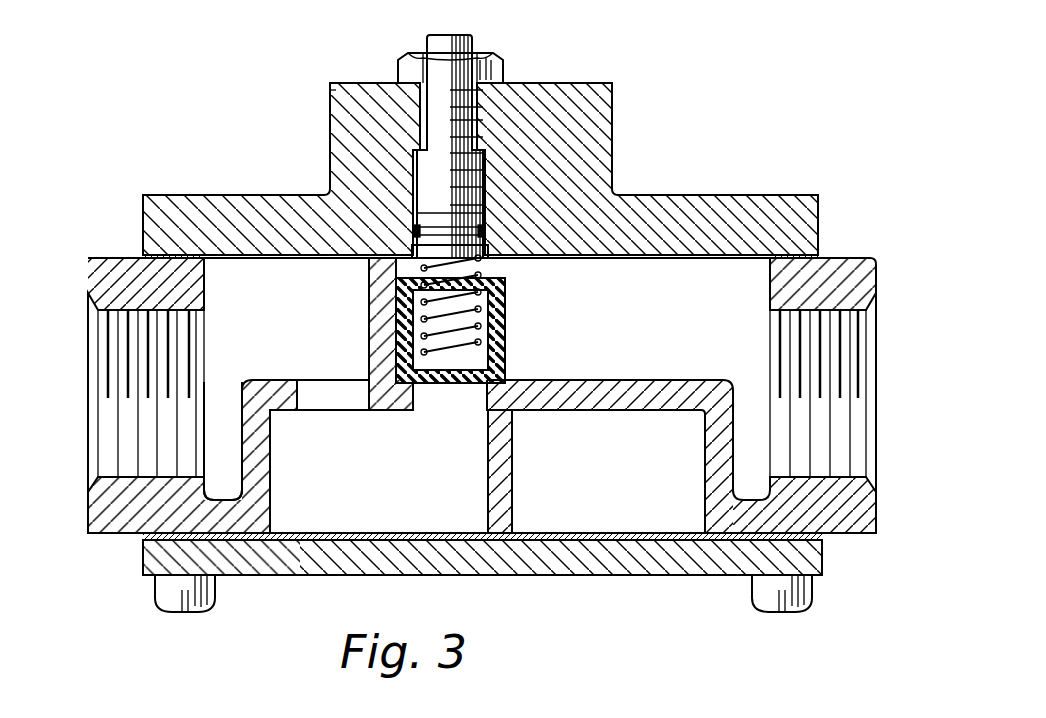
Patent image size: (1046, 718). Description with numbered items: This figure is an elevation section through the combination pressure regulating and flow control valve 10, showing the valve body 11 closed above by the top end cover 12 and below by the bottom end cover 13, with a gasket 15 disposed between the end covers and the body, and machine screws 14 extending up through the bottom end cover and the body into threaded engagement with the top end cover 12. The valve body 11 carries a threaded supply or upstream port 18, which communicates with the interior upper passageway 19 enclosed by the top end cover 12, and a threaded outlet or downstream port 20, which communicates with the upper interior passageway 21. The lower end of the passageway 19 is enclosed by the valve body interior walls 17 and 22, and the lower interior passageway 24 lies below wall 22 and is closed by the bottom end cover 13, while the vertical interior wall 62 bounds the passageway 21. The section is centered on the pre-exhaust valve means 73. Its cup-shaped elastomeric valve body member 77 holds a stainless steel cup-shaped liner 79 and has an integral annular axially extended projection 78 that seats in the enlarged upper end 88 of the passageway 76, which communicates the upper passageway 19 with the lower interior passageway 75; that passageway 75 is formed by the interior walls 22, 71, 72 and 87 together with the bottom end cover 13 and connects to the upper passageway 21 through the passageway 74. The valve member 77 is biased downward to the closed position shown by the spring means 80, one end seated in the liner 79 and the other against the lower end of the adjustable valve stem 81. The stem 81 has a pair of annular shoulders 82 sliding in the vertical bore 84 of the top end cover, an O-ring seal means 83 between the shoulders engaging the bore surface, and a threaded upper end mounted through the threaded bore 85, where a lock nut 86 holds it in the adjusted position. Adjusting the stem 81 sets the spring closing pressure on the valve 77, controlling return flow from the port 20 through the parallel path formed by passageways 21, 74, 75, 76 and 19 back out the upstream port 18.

The combination pressure regulating and flow control valve 10 is at (322, 93).
The valve body 11 is at (103, 267).
The top end cover 12 is at (598, 140).
The bottom end cover 13 is at (638, 562).
The machine screws 14 is at (165, 588).
The gasket 15 is at (147, 258).
The valve body interior wall 17 is at (724, 483).
The supply port 18 is at (843, 477).
The interior upper passageway 19 is at (705, 262).
The outlet port 20 is at (112, 477).
The upper interior passageway 21 is at (237, 268).
The valve body interior wall 22 is at (620, 392).
The lower interior passageway 24 is at (585, 520).
The vertical valve body interior wall 62 is at (375, 327).
The interior valve body wall 71 is at (506, 490).
The interior valve body wall 72 is at (340, 513).
The pre-exhaust valve means 73 is at (391, 59).
The passageway 74 is at (298, 395).
The lower interior passageway 75 is at (494, 462).
The passageway 76 is at (422, 390).
The cup-shaped valve body member 77 is at (510, 333).
The annular axially extended projection 78 is at (489, 386).
The cup-shaped liner 79 is at (500, 308).
The spring means 80 is at (398, 298).
The adjustable valve stem 81 is at (425, 175).
The annular flanges or shoulders 82 is at (415, 234).
The O-ring seal means 83 is at (487, 245).
The vertical bore 84 is at (483, 168).
The threaded bore 85 is at (427, 102).
The lock nut 86 is at (490, 73).
The interior valve body wall 87 is at (258, 462).
The enlarged upper end 88 is at (497, 386).